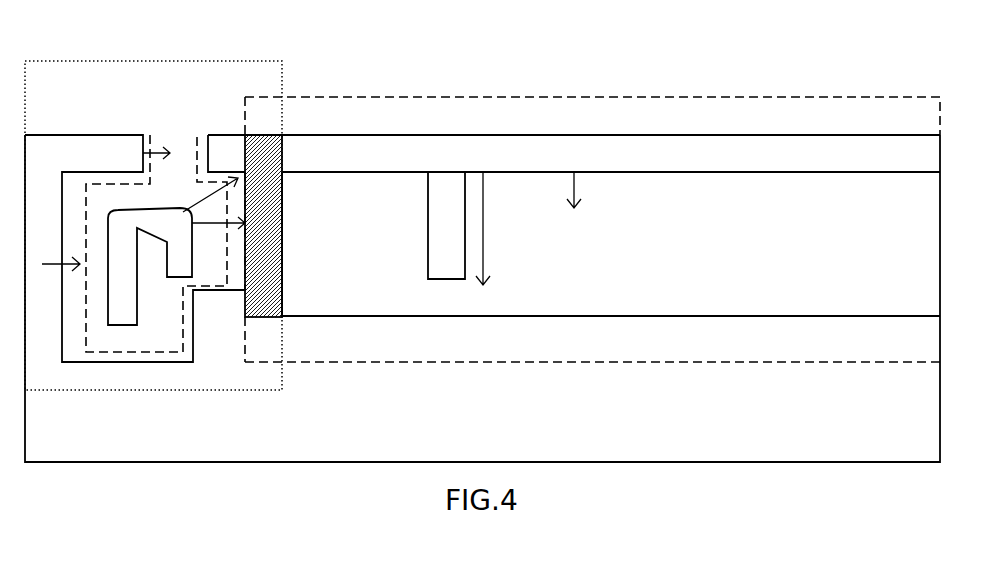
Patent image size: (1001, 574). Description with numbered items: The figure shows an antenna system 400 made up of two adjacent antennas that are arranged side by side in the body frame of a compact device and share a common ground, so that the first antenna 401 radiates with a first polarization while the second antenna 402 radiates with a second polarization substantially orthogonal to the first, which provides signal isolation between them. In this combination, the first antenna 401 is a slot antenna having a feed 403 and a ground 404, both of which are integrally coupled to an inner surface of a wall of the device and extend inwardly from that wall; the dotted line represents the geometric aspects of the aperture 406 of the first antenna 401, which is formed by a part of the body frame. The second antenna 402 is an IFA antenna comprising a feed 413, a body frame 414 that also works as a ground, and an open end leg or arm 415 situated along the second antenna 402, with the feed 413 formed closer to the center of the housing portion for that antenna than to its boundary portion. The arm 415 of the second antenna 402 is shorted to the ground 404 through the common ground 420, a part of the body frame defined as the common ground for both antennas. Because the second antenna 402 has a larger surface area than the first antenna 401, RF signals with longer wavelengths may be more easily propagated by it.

The antenna system 400 is at (372, 62).
The first antenna 401 is at (183, 61).
The second antenna 402 is at (593, 97).
The feed 403 is at (193, 260).
The ground 404 is at (86, 380).
The aperture 406 is at (195, 158).
The feed 413 is at (447, 282).
The body frame 414 is at (702, 343).
The open end leg or arm 415 is at (323, 147).
The common ground 420 is at (273, 285).